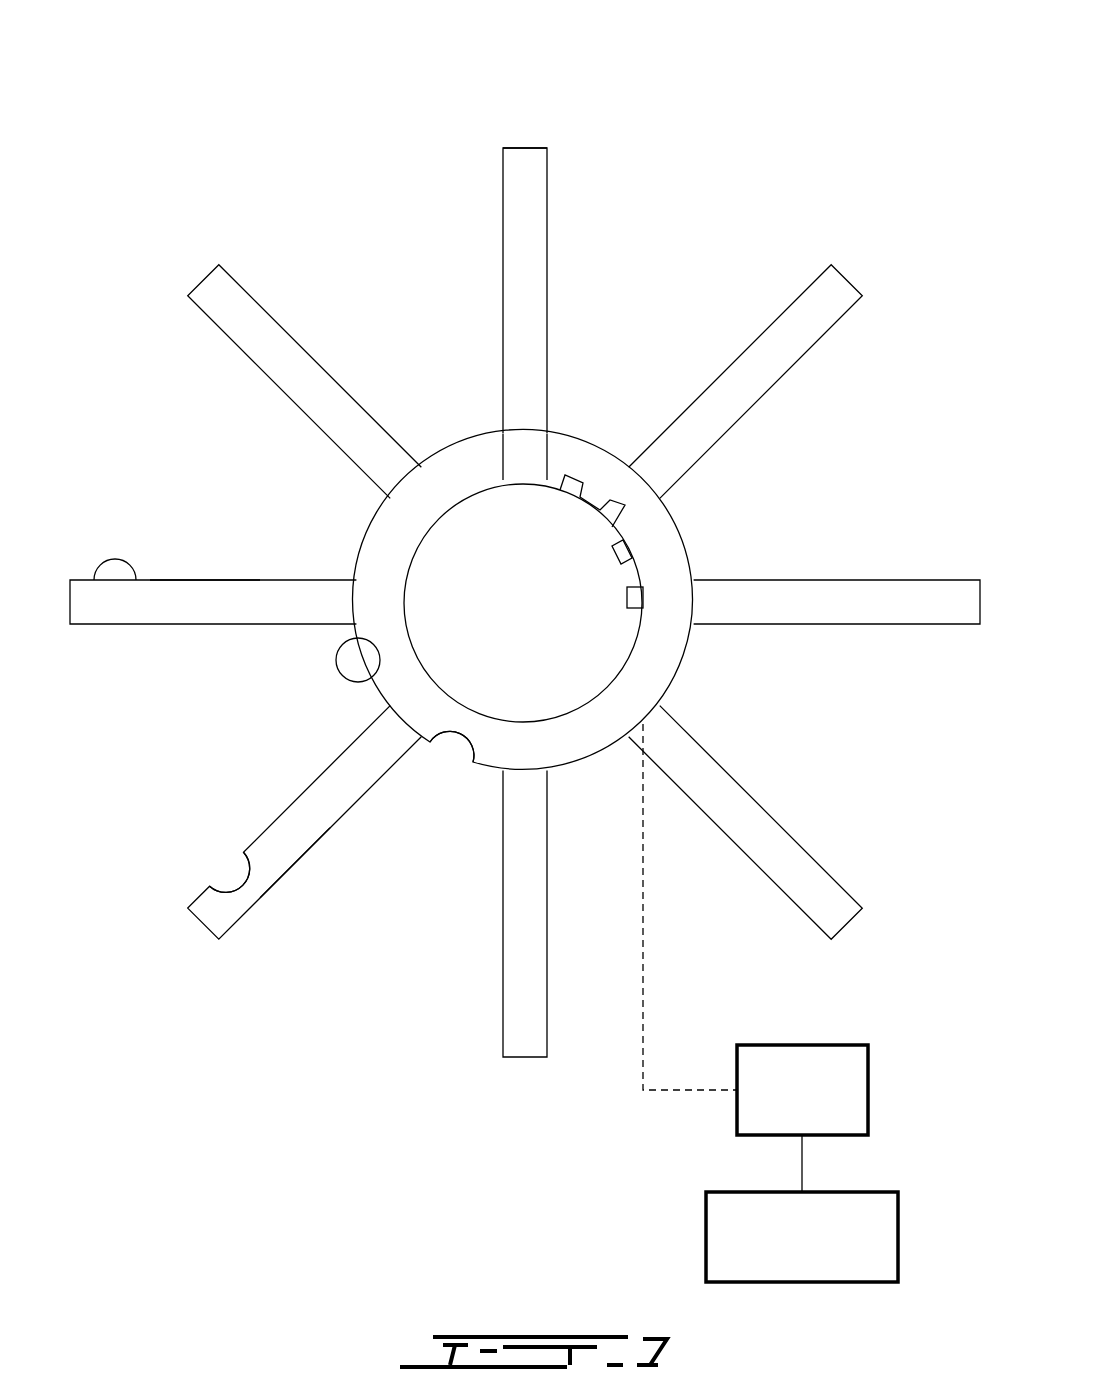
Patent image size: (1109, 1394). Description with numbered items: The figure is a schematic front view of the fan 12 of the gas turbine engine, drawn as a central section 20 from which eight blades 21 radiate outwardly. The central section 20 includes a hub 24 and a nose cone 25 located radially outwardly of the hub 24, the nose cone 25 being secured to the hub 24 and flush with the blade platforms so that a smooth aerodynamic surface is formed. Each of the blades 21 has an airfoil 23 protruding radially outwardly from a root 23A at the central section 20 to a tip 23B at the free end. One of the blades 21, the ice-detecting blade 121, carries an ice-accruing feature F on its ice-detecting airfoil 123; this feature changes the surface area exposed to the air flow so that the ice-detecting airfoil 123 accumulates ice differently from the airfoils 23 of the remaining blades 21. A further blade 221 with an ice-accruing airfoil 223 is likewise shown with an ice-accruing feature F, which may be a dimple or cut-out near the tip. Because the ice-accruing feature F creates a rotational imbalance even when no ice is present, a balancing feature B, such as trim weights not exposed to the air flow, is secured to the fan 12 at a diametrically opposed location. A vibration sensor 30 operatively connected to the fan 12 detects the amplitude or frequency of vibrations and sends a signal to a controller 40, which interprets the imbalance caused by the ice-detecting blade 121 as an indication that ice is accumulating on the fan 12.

The fan 12 is at (742, 128).
The central section 20 is at (665, 644).
The blades 21 is at (492, 288).
The airfoils 23 is at (523, 218).
The roots 23A is at (535, 432).
The tips 23B is at (527, 148).
The hub 24 is at (522, 485).
The nose cone 25 is at (365, 540).
The balancing feature B is at (623, 507).
The ice-accruing feature F is at (115, 550).
The ice-detecting blade 121 is at (184, 644).
The ice-detecting airfoil 123 is at (200, 600).
The fan blade 221 is at (245, 935).
The ice-accruing airfoil 223 is at (300, 837).
The sensor 30 is at (868, 1092).
The controller 40 is at (898, 1237).